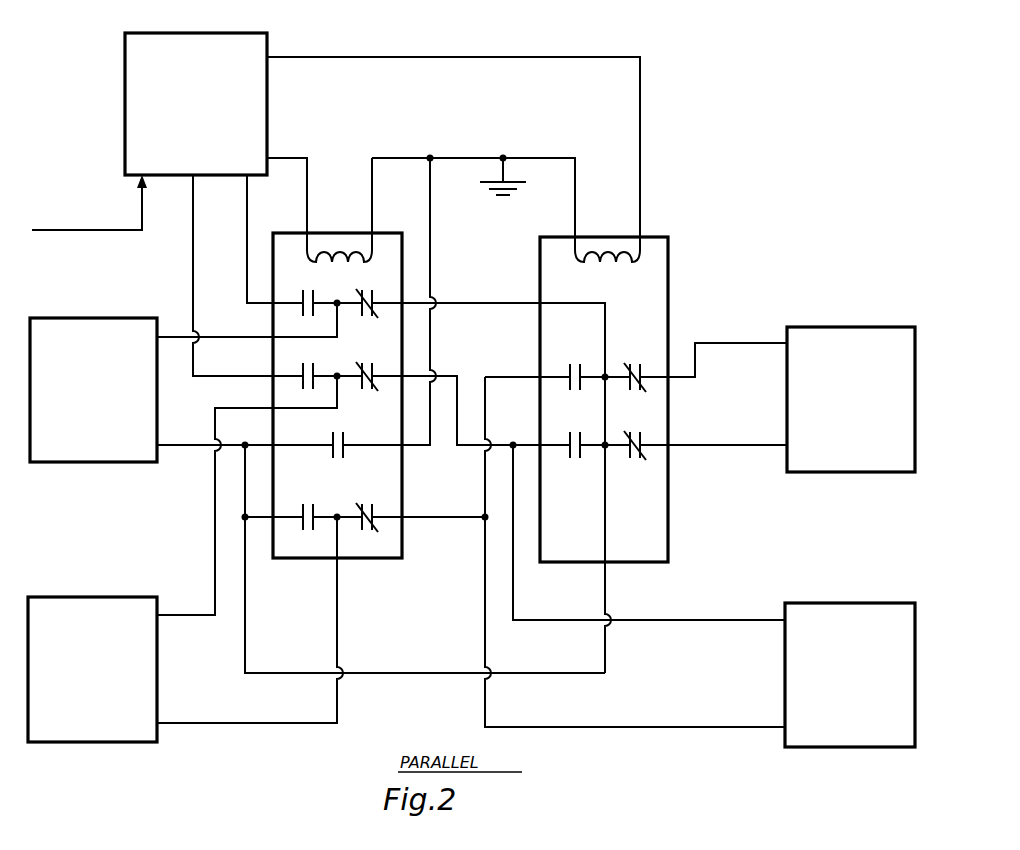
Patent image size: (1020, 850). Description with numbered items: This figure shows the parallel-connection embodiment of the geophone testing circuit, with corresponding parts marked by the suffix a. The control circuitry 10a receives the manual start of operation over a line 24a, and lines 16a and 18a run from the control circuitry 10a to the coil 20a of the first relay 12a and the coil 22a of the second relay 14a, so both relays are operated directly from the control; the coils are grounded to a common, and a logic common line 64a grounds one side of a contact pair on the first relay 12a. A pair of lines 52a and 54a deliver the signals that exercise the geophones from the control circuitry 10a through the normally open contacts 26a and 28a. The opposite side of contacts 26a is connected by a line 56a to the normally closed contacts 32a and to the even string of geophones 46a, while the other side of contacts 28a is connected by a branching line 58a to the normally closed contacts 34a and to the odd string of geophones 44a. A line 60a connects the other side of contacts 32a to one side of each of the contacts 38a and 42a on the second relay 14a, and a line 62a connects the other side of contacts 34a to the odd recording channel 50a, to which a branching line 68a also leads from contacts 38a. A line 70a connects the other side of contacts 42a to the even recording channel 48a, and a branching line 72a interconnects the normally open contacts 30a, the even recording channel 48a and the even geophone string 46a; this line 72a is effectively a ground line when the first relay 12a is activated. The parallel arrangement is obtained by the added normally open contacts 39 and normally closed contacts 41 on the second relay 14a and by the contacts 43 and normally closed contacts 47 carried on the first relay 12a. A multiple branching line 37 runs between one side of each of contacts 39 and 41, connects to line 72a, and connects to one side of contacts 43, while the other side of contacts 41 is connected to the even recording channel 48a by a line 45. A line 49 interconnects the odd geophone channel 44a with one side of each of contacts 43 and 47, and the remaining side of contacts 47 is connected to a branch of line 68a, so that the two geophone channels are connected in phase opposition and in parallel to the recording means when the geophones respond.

The control circuitry 10a is at (224, 33).
The first relay 12a is at (334, 228).
The second relay 14a is at (600, 230).
The line 16a is at (293, 157).
The line 18a is at (640, 128).
The coil 20a is at (332, 264).
The coil 22a is at (619, 271).
The line 24a is at (95, 231).
The normally open contacts 26a is at (318, 312).
The normally open contacts 28a is at (318, 384).
The normally open contacts 30a is at (343, 438).
The normally closed contacts 32a is at (352, 318).
The normally closed contacts 34a is at (352, 390).
The multiple branching line 37 is at (263, 671).
The contacts 38a is at (588, 366).
The normally open contacts 39 is at (572, 460).
The normally closed contacts 41 is at (632, 460).
The normally closed contacts 42a is at (656, 366).
The contacts 43 is at (322, 503).
The geophones (odd) 44a is at (80, 597).
The line 45 is at (740, 424).
The geophones (even) 46a is at (87, 318).
The normally closed contacts 47 is at (385, 503).
The even recording channel 48a is at (862, 327).
The line 49 is at (257, 722).
The odd recording channel 50a is at (865, 603).
The line 52a is at (247, 200).
The line 54a is at (193, 230).
The line 56a is at (240, 333).
The branching line 58a is at (213, 573).
The line 60a is at (518, 290).
The line 62a is at (684, 620).
The logic common line 64a is at (433, 235).
The branching line 68a is at (686, 728).
The line 70a is at (746, 342).
The branching line 72a is at (198, 443).